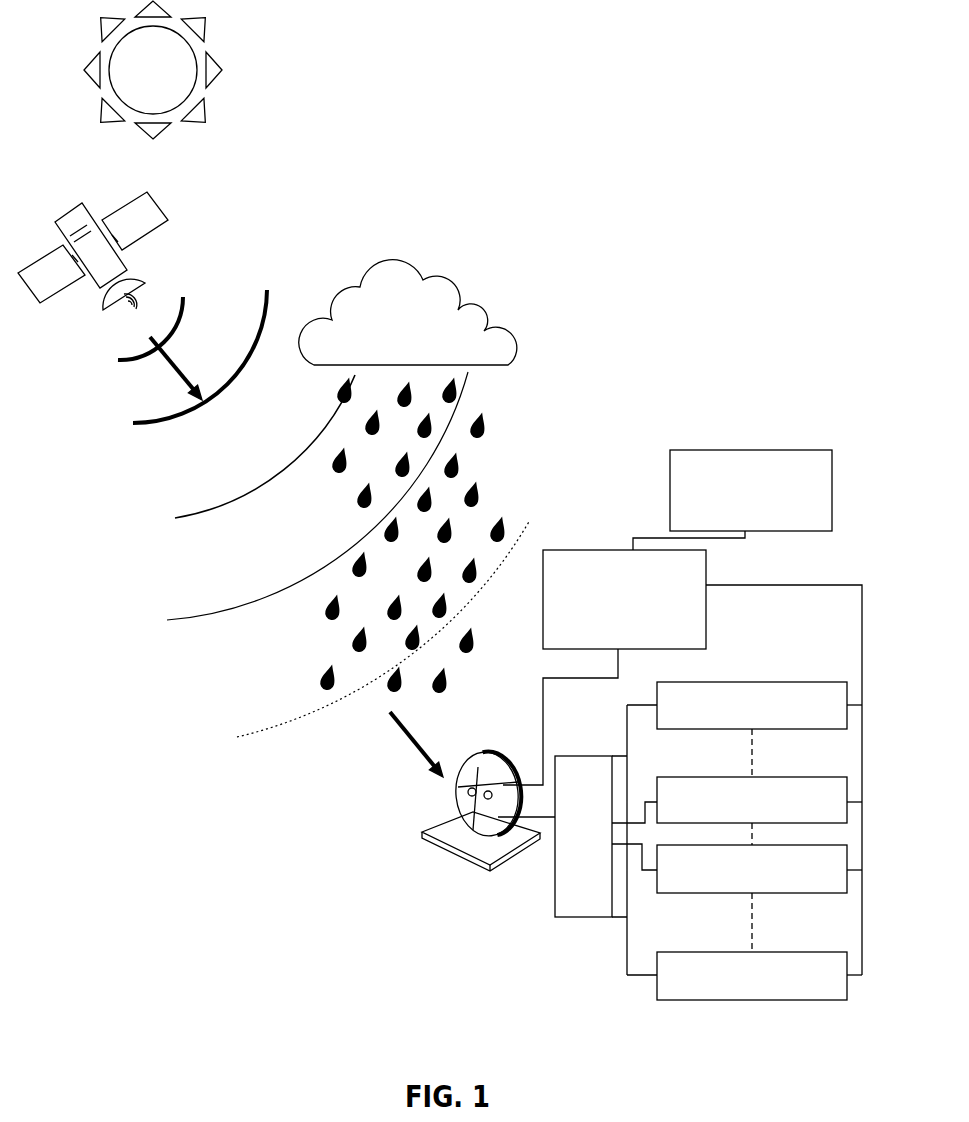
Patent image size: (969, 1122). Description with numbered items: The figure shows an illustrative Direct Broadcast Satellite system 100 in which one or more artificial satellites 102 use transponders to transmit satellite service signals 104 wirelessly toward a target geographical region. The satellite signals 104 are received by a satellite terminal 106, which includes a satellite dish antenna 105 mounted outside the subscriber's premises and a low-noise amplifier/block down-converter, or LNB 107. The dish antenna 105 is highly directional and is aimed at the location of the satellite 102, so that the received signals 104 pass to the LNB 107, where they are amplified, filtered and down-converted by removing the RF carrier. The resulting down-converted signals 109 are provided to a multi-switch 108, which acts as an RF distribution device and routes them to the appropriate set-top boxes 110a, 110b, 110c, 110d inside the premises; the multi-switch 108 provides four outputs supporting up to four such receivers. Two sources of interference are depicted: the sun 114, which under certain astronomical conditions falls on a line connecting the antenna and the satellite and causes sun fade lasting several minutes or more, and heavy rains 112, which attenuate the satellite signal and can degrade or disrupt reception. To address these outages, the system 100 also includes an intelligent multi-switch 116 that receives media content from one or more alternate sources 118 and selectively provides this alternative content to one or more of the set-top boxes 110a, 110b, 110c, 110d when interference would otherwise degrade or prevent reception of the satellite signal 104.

The Direct Broadcast Satellite system 100 is at (473, 1073).
The artificial satellite 102 is at (165, 219).
The satellite service signals 104 is at (400, 732).
The satellite dish antenna 105 is at (442, 793).
The satellite terminal 106 is at (463, 867).
The low-noise amplifier/block down-converter (LNB) 107 is at (465, 767).
The multi-switch 108 is at (582, 917).
The down-converted signals 109 is at (545, 820).
The set-top box 110a is at (712, 680).
The set-top box 110b is at (667, 777).
The set-top box 110c is at (828, 893).
The set-top box 110d is at (832, 1000).
The heavy rains 112 is at (542, 432).
The sun 114 is at (170, 81).
The intelligent multi-switch 116 is at (555, 550).
The alternate sources of media content 118 is at (682, 450).